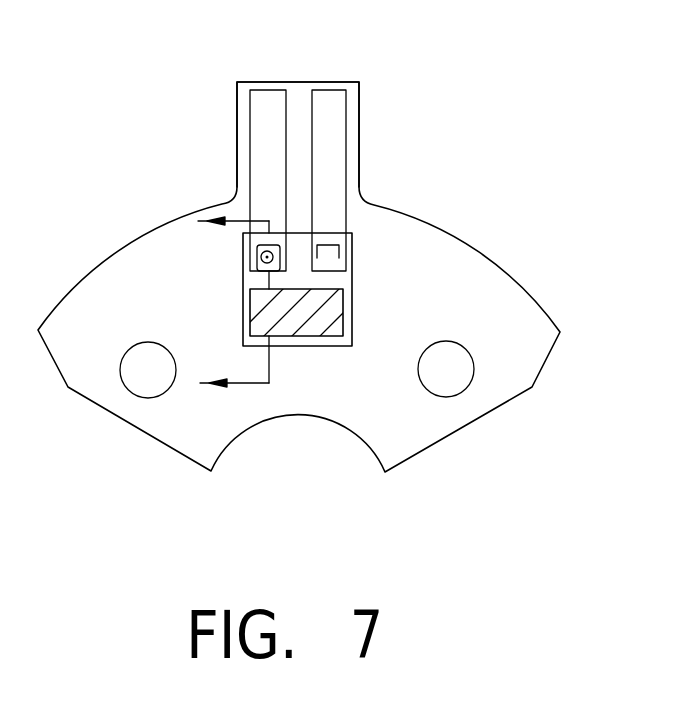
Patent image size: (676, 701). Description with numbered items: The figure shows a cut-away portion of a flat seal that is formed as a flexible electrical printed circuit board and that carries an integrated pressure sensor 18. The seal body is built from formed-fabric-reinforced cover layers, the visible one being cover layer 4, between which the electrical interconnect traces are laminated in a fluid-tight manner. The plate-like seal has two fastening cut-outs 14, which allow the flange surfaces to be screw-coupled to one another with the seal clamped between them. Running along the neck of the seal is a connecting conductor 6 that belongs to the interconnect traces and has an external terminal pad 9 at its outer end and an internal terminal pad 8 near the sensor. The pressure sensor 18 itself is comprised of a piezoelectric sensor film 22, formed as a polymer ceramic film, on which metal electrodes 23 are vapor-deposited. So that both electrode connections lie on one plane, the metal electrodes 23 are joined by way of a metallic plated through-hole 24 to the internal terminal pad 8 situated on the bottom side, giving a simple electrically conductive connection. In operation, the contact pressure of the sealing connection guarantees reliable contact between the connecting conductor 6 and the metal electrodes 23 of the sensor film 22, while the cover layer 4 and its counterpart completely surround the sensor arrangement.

The cover layer 4 is at (470, 267).
The connecting conductor 6 is at (263, 130).
The external terminal pad 9 is at (260, 98).
The internal terminal pad 8 is at (235, 300).
The piezoelectric sensor film 22 is at (297, 278).
The metal electrodes 23 is at (266, 280).
The metallic plated through-hole 24 is at (262, 258).
The pressure sensor 18 is at (312, 325).
The fastening cut-outs 14 is at (437, 383).